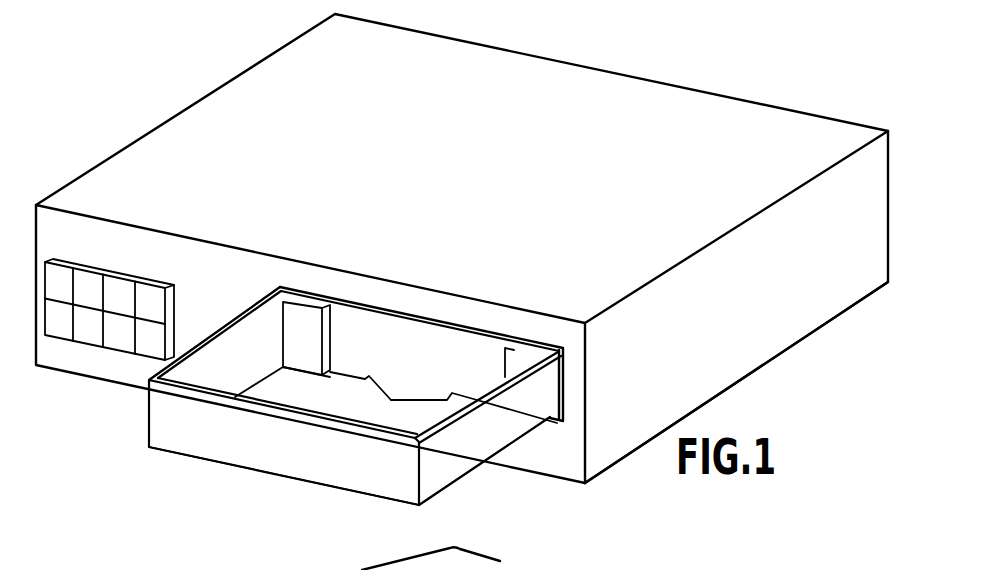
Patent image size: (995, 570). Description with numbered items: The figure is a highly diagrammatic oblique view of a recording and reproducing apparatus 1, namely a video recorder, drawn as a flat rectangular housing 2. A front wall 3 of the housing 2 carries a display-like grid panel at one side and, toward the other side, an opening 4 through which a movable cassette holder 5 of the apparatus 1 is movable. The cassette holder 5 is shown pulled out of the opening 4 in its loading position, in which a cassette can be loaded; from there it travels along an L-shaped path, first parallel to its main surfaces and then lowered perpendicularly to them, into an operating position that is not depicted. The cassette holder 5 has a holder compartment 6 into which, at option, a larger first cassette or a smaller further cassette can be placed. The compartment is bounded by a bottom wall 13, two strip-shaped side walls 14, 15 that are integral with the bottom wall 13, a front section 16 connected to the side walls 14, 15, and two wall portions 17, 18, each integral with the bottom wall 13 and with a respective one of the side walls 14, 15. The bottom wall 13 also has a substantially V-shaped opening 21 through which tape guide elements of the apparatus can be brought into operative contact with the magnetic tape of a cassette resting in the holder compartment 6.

The recording and reproducing apparatus 1 is at (692, 67).
The housing 2 is at (790, 352).
The front wall 3 is at (82, 360).
The opening 4 is at (560, 422).
The cassette holder 5 is at (148, 447).
The holder compartment 6 is at (238, 358).
The bottom wall 13 is at (343, 385).
The side wall 14 is at (258, 327).
The side wall 15 is at (451, 461).
The front section 16 is at (238, 452).
The wall portion 17 is at (313, 340).
The wall portion 18 is at (515, 357).
The V-shaped opening 21 is at (402, 400).